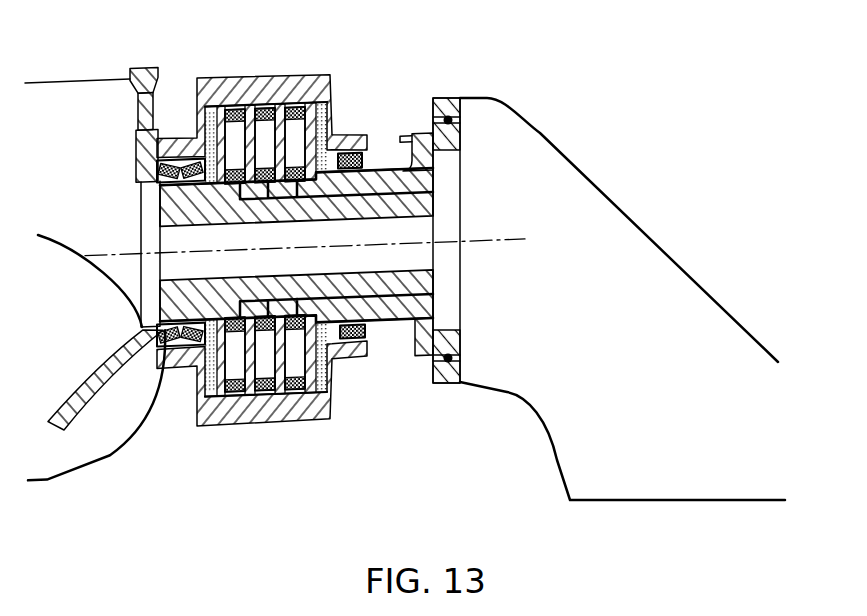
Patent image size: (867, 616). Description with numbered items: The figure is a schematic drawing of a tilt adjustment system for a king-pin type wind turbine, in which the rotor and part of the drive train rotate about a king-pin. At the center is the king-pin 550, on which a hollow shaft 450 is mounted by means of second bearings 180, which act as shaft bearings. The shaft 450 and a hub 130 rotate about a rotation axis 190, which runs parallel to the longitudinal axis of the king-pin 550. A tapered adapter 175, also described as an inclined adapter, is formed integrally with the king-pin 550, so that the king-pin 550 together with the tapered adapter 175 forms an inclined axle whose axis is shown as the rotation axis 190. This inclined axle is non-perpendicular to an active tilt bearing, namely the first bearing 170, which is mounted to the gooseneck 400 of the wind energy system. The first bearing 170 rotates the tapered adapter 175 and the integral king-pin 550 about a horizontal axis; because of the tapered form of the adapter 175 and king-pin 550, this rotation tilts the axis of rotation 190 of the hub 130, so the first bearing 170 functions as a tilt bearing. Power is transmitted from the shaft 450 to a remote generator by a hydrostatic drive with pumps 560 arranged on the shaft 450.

The hub 130 is at (68, 468).
The first bearing 170 is at (452, 385).
The tapered adapter 175 is at (425, 99).
The second bearings 180 is at (190, 352).
The rotation axis 190 is at (101, 253).
The gooseneck 400 is at (557, 460).
The hollow shaft 450 is at (218, 75).
The king-pin 550 is at (383, 160).
The pumps 560 is at (242, 392).